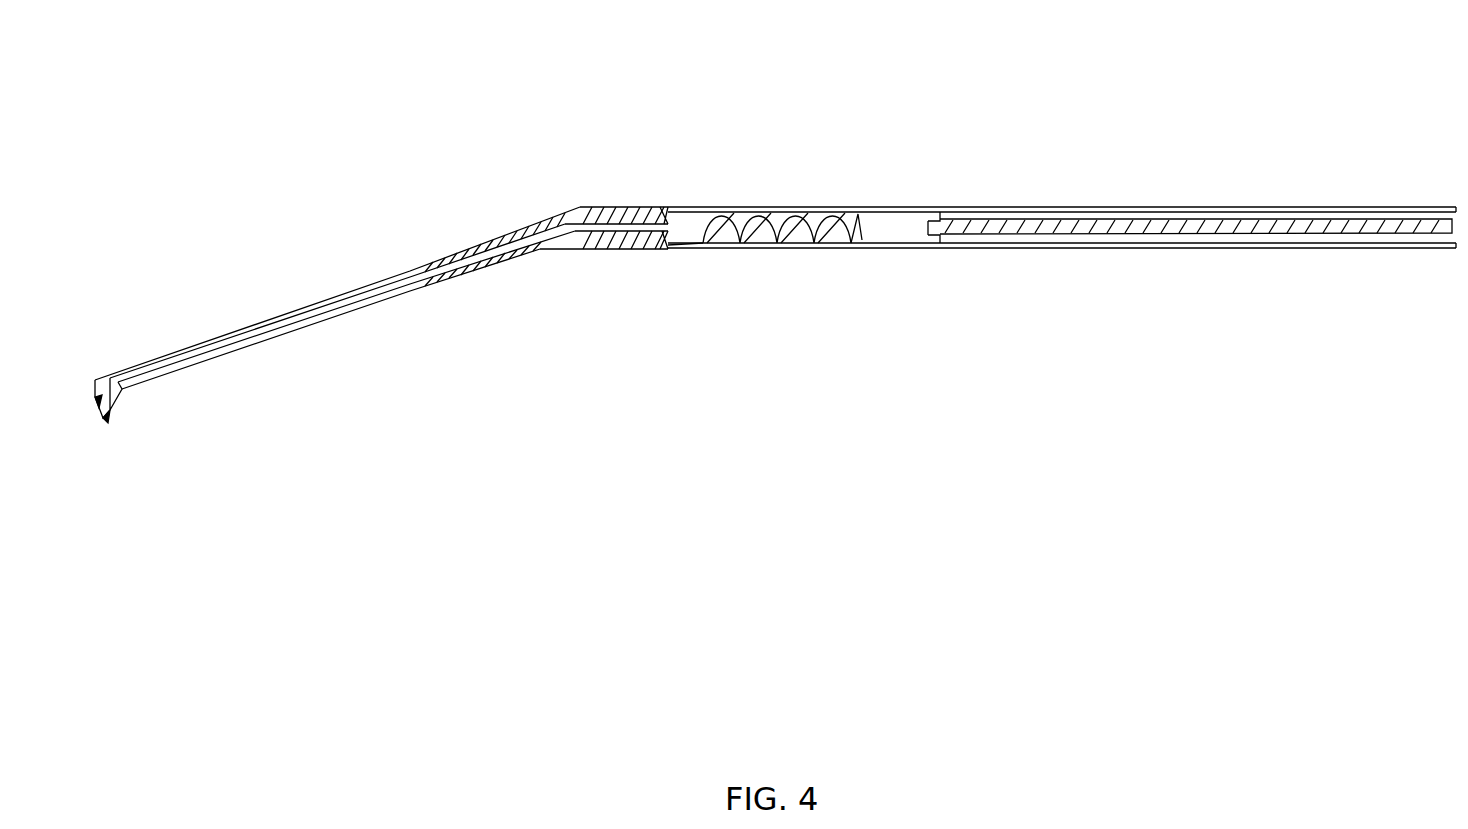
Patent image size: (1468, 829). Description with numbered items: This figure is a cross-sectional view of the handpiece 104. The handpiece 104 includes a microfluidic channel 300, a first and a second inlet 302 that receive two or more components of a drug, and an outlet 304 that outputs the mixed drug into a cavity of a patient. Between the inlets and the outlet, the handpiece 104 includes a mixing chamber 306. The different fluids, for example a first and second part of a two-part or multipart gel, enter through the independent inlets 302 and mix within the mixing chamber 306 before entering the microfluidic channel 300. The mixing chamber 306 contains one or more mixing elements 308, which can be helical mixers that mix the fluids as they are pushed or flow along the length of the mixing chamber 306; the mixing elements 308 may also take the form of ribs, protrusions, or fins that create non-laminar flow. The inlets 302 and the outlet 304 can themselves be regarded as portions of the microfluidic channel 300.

The handpiece 104 is at (1181, 59).
The microfluidic channel 300 is at (580, 218).
The first and second inlet 302 is at (1455, 210).
The outlet 304 is at (101, 400).
The mixing chamber 306 is at (905, 230).
The mixing elements 308 is at (785, 232).